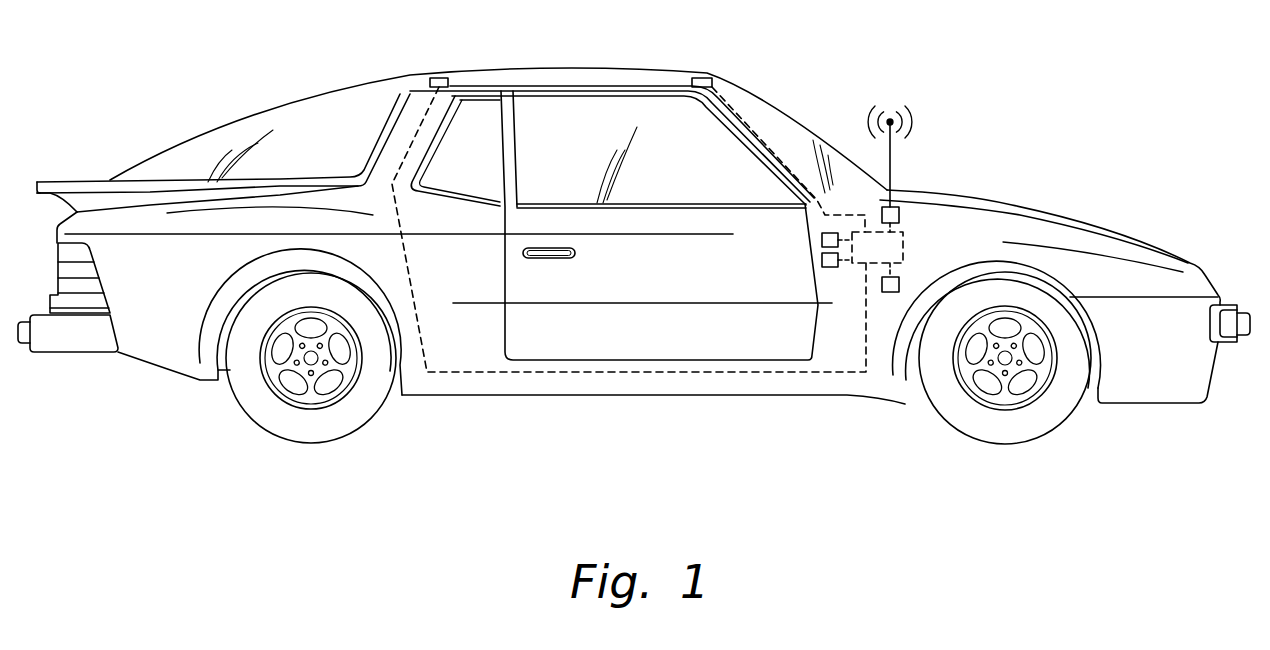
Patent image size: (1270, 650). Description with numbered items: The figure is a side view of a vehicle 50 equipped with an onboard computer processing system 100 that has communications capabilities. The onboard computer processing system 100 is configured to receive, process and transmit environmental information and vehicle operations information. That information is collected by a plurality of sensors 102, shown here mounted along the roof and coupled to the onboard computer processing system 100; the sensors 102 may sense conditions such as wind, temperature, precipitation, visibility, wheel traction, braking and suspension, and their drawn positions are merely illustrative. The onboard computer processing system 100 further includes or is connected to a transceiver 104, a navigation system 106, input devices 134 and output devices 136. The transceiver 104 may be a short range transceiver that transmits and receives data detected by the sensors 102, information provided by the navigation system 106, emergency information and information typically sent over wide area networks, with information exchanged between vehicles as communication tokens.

The vehicle 50 is at (1011, 206).
The onboard computer processing system 100 is at (905, 245).
The sensors 102 is at (443, 77).
The transceiver 104 is at (899, 214).
The navigation system 106 is at (899, 285).
The input devices 134 is at (822, 240).
The output devices 136 is at (822, 260).